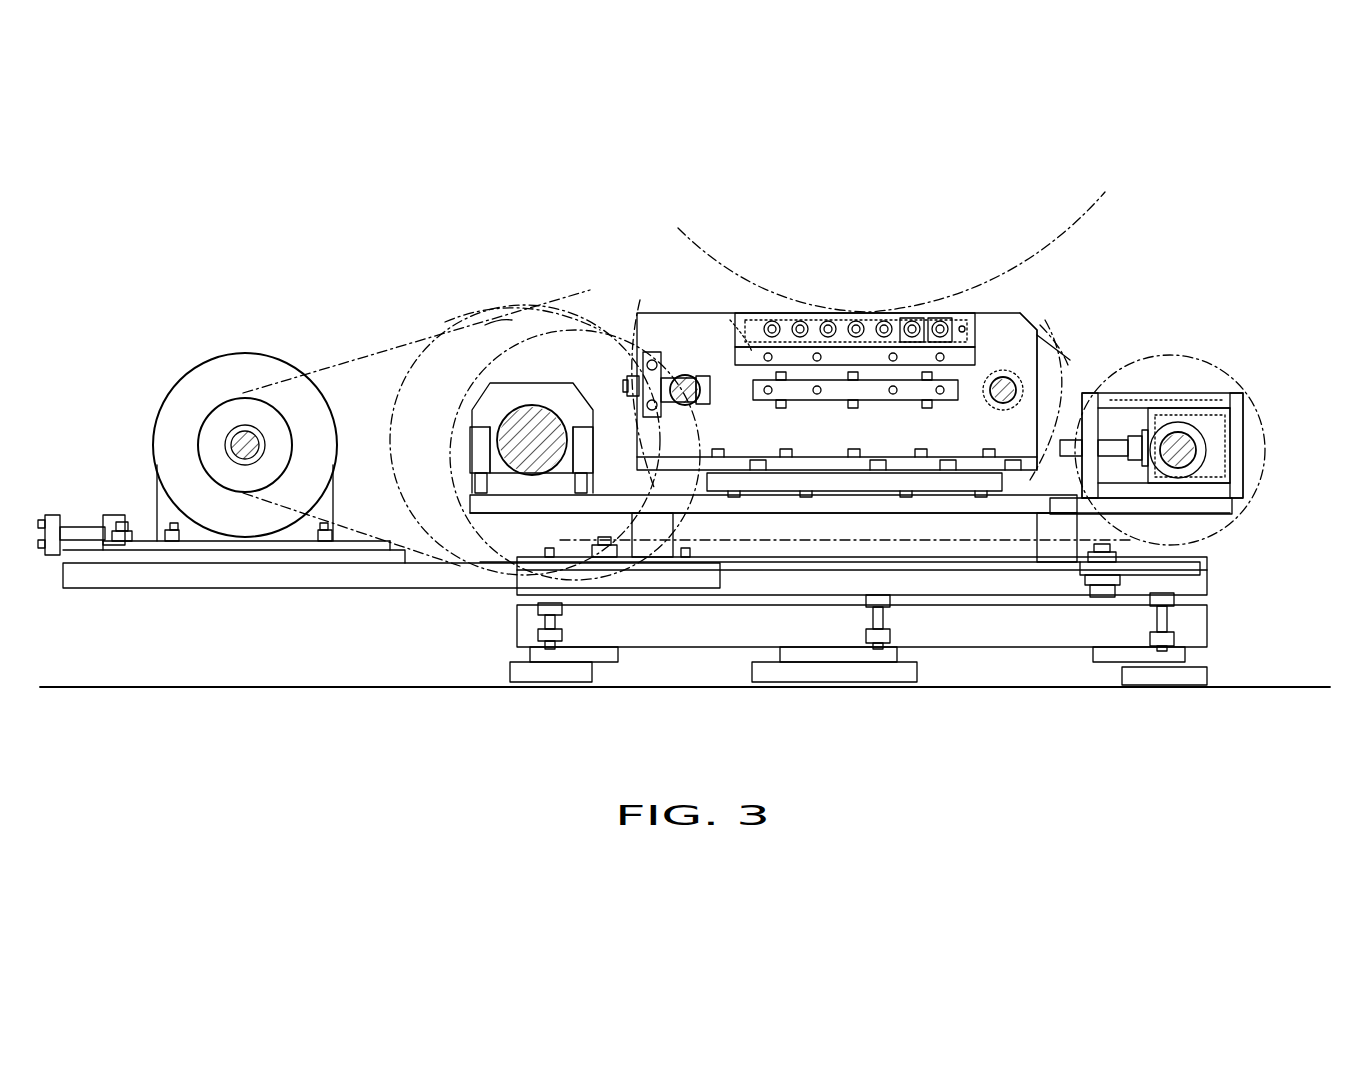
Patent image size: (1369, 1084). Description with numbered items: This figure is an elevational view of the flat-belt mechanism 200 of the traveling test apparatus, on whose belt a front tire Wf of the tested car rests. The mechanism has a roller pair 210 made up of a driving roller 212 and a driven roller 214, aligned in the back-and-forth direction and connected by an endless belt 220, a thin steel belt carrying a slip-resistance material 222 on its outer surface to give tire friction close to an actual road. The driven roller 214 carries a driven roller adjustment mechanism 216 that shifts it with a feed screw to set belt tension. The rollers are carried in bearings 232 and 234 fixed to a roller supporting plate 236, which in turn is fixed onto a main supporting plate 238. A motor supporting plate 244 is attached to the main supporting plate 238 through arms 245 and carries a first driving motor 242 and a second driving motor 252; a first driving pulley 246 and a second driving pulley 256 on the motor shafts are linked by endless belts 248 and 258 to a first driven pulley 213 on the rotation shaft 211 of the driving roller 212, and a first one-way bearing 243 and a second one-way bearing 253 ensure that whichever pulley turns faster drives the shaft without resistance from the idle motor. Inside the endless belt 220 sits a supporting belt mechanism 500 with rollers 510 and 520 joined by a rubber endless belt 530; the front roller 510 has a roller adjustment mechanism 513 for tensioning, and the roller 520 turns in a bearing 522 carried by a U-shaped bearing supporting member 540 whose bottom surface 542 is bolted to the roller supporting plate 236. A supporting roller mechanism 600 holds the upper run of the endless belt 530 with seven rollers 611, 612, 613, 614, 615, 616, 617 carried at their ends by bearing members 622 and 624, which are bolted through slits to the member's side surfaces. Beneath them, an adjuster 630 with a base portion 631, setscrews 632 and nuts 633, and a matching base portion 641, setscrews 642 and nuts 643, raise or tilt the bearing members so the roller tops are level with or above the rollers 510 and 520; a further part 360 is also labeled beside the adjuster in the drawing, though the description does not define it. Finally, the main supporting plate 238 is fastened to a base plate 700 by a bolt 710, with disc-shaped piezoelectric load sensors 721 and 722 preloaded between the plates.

The flat-belt mechanism 200 is at (1288, 560).
The first driving motor 242 is at (720, 455).
The second driving motor 252 is at (258, 356).
The first driving pulley 246 is at (202, 385).
The second driving pulley 256 is at (215, 400).
The endless belt 248 is at (246, 395).
The endless belt 258 is at (335, 375).
The first one-way bearing 243 is at (345, 459).
The second one-way bearing 253 is at (465, 480).
The first driven pulley 213 is at (400, 405).
The driving roller 212 is at (476, 295).
The roller pair 210 is at (445, 322).
The slip-resistance material 222 is at (510, 320).
The endless belt 220 is at (540, 300).
The roller 510 is at (633, 322).
The bearing 232 is at (470, 435).
The rotation shaft 211 is at (560, 388).
The roller supporting plate 236 is at (470, 500).
The supporting belt mechanism 500 is at (1085, 355).
The front tire Wf is at (911, 244).
The roller 520 is at (1075, 330).
The bearing 522 is at (1055, 335).
The supporting roller mechanism 600 is at (975, 300).
The bearing member 622 is at (922, 281).
The bearing member 624 is at (985, 320).
The roller 611 is at (770, 318).
The roller 612 is at (800, 318).
The roller 613 is at (828, 318).
The roller 614 is at (856, 318).
The roller 615 is at (884, 318).
The roller 616 is at (912, 318).
The roller 617 is at (940, 318).
The nut 633 is at (824, 341).
The nut 643 is at (748, 350).
The setscrew 632 is at (855, 405).
The setscrew 642 is at (778, 400).
The base portion 631 is at (989, 404).
The base portion 641 is at (998, 402).
The actuator 360 is at (701, 402).
The adjuster 630 is at (760, 410).
The endless belt 530 is at (733, 320).
The roller adjustment mechanism 513 is at (637, 325).
The driven roller 214 is at (1188, 428).
The driven roller adjustment mechanism 216 is at (1240, 420).
The bearing 234 is at (1240, 470).
The main supporting plate 238 is at (1180, 570).
The bolt 710 is at (1080, 565).
The bottom surface 542 is at (862, 580).
The bearing supporting member 540 is at (735, 565).
The base plate 700 is at (778, 648).
The load sensor 721 is at (610, 617).
The load sensor 722 is at (1080, 590).
The arm 245 is at (185, 588).
The motor supporting plate 244 is at (300, 567).